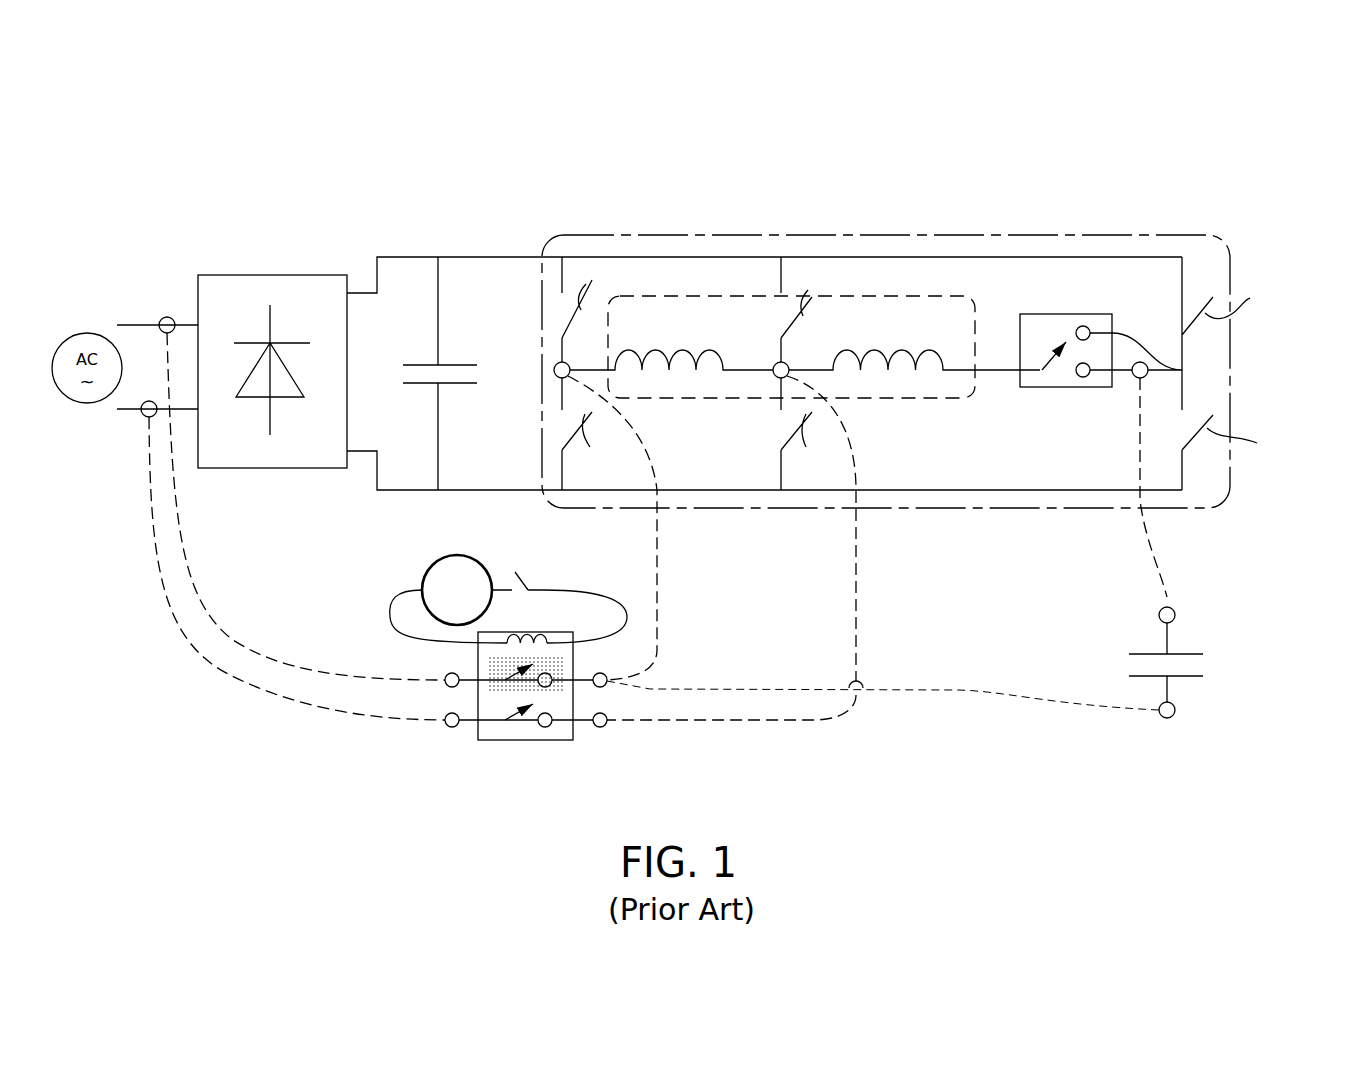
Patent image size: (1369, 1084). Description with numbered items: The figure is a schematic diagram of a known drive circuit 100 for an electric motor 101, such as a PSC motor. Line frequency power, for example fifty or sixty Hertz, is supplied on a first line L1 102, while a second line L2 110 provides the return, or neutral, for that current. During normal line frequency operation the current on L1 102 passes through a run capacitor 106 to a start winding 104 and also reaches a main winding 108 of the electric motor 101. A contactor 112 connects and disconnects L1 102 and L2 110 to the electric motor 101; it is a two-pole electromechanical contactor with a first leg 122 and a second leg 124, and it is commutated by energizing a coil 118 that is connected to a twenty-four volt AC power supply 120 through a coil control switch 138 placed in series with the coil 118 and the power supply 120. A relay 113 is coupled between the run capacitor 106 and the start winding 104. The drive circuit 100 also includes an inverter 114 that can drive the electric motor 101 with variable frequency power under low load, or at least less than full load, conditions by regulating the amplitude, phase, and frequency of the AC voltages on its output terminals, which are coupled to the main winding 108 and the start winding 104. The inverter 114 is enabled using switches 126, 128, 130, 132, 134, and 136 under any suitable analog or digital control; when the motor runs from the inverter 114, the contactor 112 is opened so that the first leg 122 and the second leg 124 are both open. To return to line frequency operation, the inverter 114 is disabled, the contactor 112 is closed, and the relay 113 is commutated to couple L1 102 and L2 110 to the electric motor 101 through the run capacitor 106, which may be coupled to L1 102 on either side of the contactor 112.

The drive circuit 100 is at (1290, 145).
The electric motor 101 is at (880, 278).
The first line L1 102 is at (128, 314).
The start winding 104 is at (930, 347).
The run capacitor 106 is at (1182, 652).
The main winding 108 is at (712, 348).
The second line L2 110 is at (124, 426).
The contactor 112 is at (543, 729).
The relay 113 is at (1065, 387).
The inverter 114 is at (1232, 340).
The coil 118 is at (508, 643).
The 24 Vac power supply 120 is at (433, 560).
The first leg 122 is at (573, 662).
The second leg 124 is at (573, 720).
The switch 126 is at (604, 297).
The switch 128 is at (592, 451).
The switch 130 is at (808, 297).
The switch 132 is at (810, 451).
The switch 134 is at (1241, 333).
The switch 136 is at (1243, 452).
The coil control switch 138 is at (518, 573).